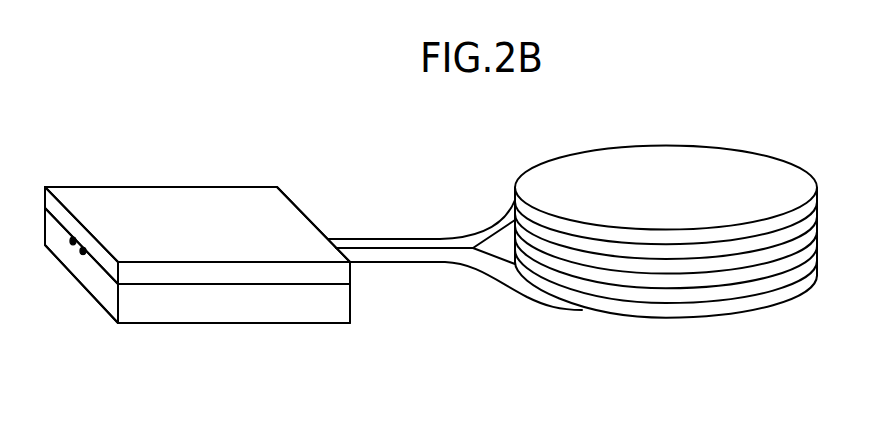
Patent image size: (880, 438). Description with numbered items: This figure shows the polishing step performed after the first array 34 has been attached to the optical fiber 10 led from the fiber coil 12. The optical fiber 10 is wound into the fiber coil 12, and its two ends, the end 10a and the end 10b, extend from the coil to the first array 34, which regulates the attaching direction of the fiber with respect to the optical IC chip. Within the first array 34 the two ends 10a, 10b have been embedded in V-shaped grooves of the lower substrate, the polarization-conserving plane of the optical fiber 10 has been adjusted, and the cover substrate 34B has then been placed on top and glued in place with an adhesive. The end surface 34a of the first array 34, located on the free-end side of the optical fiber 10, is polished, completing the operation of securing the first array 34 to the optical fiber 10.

The optical fiber 10 is at (437, 256).
The end of optical fiber 10a is at (73, 244).
The end of optical fiber 10b is at (84, 254).
The fiber coil 12 is at (645, 162).
The first array 34 is at (262, 325).
The end surface 34a is at (109, 302).
The cover substrate 34B is at (240, 203).